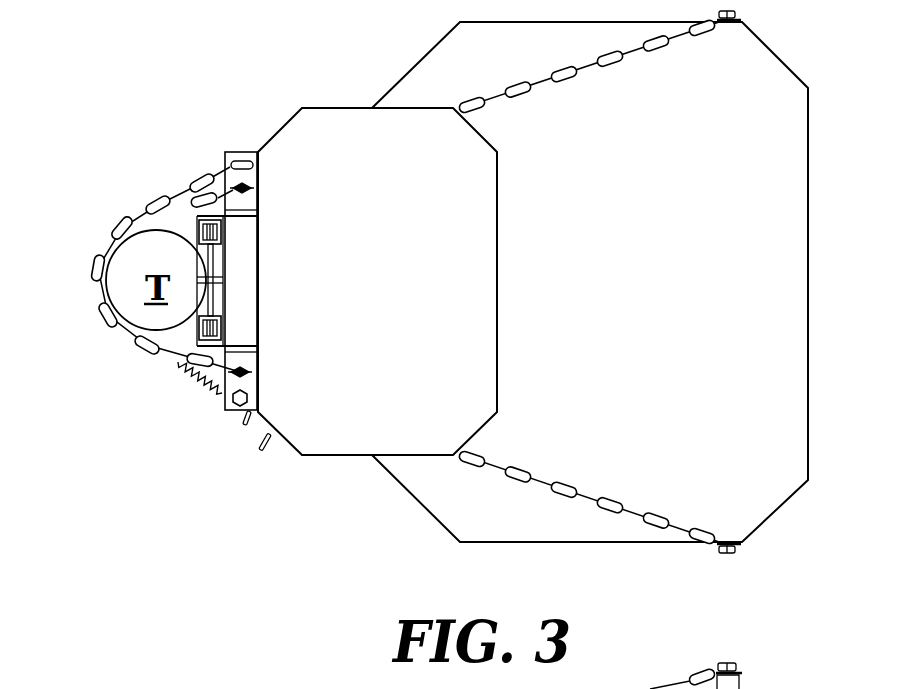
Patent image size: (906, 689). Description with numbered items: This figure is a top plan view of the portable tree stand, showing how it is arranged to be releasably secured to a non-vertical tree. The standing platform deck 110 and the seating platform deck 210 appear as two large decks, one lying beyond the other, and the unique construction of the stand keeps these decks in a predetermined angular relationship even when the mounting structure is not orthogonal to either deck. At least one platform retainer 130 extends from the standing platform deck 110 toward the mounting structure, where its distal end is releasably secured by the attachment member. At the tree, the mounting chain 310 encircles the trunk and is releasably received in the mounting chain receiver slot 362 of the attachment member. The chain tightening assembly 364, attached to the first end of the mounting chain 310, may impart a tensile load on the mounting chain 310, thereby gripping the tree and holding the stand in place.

The standing platform deck 110 is at (674, 302).
The platform retainer 130 is at (618, 60).
The seating platform deck 210 is at (402, 302).
The mounting chain 310 is at (160, 206).
The mounting chain receiver slot 362 is at (248, 160).
The chain tightening assembly 364 is at (166, 392).